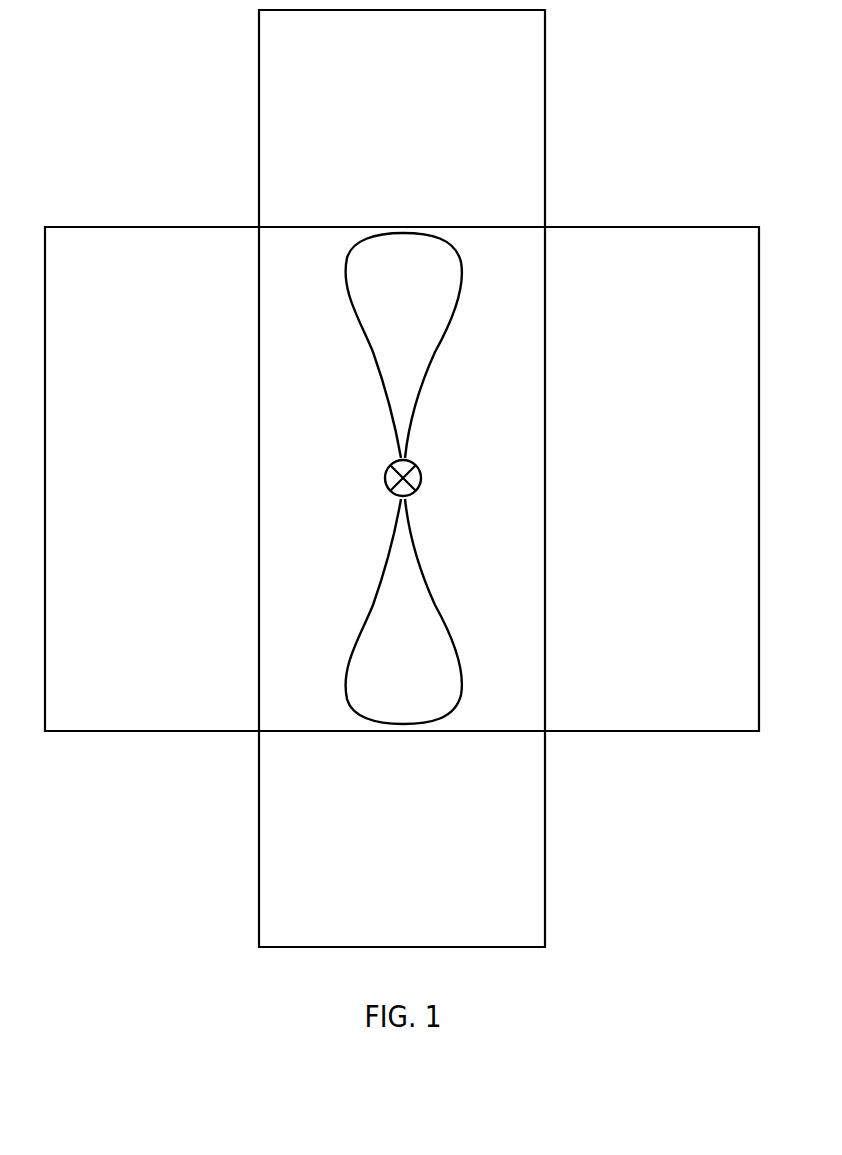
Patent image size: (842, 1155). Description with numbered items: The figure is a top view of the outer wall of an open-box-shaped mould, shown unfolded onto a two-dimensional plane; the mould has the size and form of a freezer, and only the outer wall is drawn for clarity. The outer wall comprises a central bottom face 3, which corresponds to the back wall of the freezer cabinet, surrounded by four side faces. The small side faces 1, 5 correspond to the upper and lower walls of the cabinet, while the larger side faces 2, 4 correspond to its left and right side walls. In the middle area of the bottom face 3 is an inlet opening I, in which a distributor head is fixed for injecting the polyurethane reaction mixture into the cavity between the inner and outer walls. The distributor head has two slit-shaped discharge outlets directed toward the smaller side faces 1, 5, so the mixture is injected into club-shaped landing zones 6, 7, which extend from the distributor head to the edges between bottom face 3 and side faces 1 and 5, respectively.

The side face 1 is at (410, 132).
The side face 2 is at (160, 493).
The bottom face 3 is at (481, 493).
The side face 4 is at (659, 493).
The side face 5 is at (411, 853).
The club-shaped landing zone 6 is at (384, 283).
The club-shaped landing zone 7 is at (377, 693).
The inlet opening I is at (410, 462).